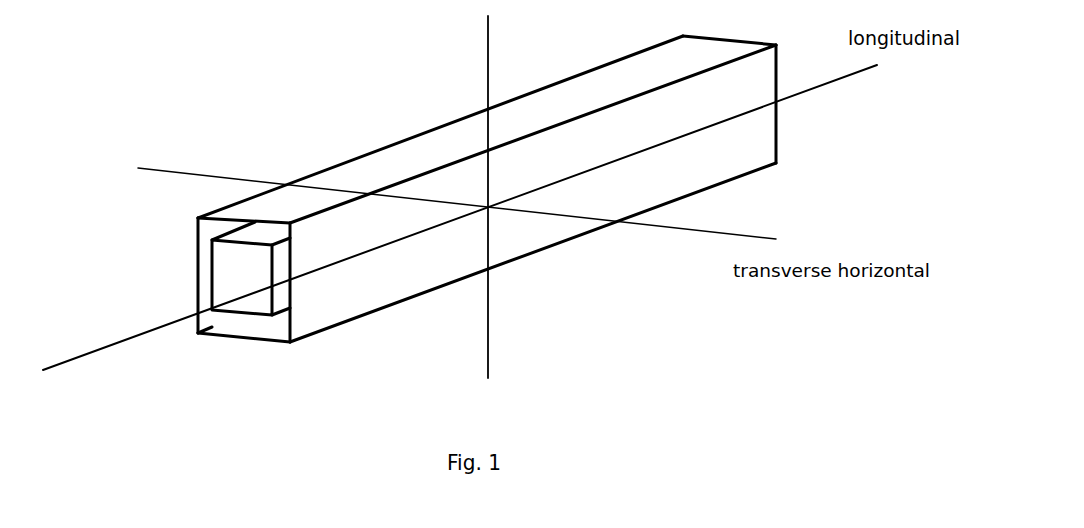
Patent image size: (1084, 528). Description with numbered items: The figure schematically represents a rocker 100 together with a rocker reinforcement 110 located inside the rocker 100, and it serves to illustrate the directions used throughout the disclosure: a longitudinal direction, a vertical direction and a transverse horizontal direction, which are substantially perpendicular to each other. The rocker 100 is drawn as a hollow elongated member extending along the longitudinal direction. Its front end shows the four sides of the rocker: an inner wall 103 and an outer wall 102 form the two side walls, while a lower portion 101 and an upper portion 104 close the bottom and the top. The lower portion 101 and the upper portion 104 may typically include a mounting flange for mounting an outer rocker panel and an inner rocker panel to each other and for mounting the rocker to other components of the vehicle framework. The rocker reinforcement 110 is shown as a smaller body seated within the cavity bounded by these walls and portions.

The rocker 100 is at (444, 221).
The lower portion 101 is at (251, 330).
The outer wall 102 is at (310, 297).
The inner wall 103 is at (207, 265).
The upper portion 104 is at (261, 207).
The rocker reinforcement 110 is at (238, 279).